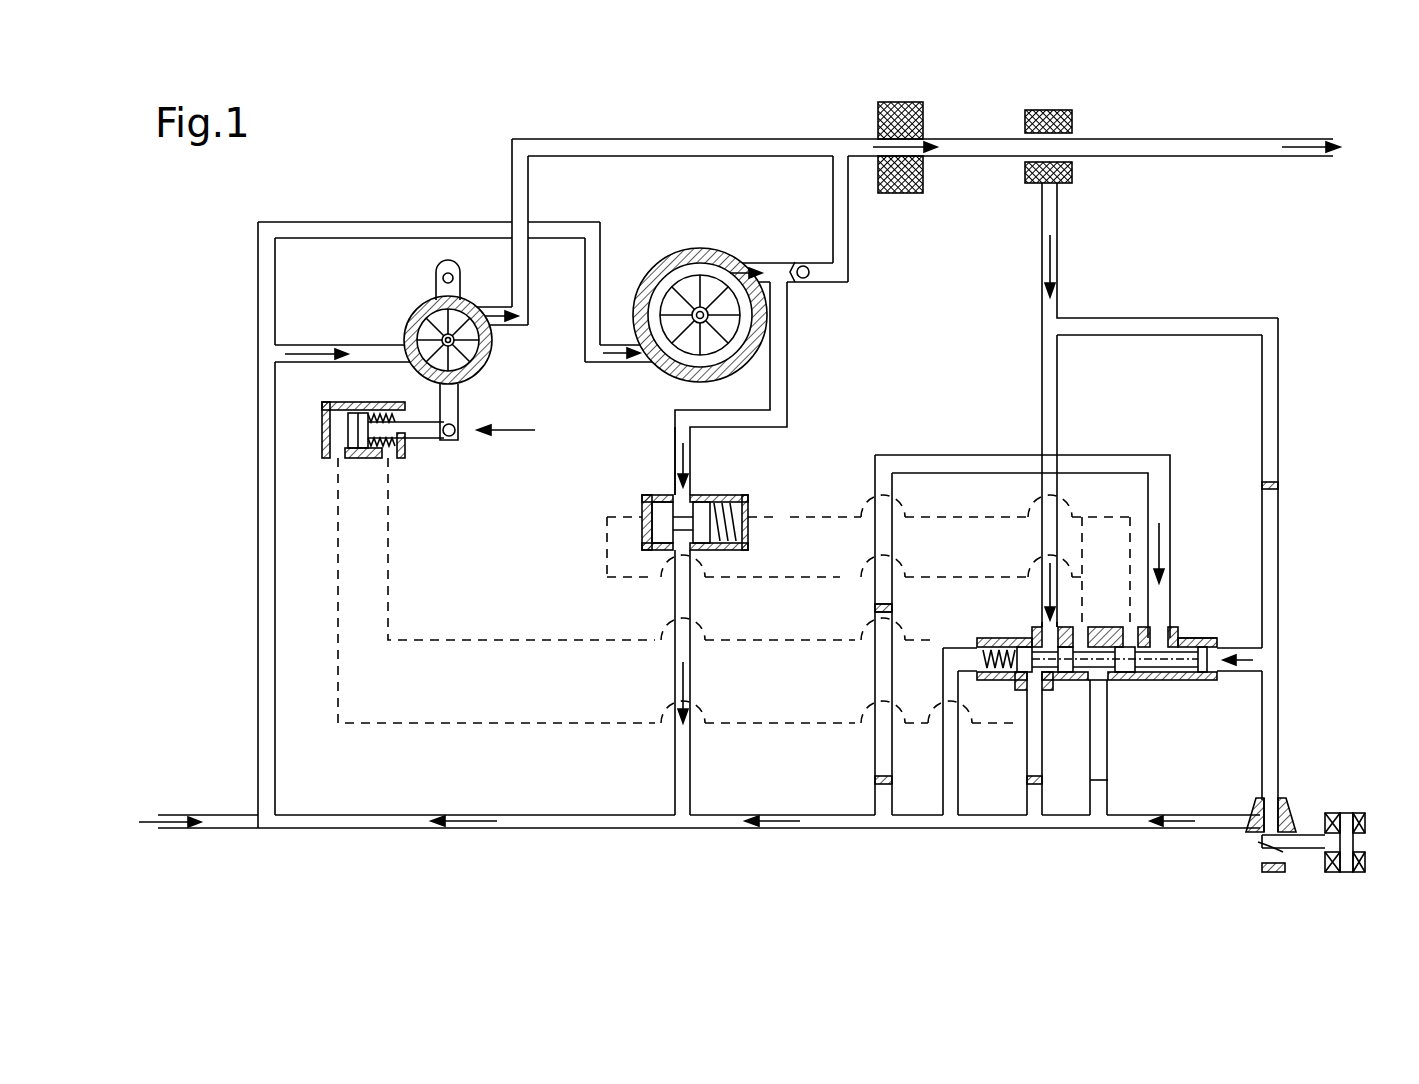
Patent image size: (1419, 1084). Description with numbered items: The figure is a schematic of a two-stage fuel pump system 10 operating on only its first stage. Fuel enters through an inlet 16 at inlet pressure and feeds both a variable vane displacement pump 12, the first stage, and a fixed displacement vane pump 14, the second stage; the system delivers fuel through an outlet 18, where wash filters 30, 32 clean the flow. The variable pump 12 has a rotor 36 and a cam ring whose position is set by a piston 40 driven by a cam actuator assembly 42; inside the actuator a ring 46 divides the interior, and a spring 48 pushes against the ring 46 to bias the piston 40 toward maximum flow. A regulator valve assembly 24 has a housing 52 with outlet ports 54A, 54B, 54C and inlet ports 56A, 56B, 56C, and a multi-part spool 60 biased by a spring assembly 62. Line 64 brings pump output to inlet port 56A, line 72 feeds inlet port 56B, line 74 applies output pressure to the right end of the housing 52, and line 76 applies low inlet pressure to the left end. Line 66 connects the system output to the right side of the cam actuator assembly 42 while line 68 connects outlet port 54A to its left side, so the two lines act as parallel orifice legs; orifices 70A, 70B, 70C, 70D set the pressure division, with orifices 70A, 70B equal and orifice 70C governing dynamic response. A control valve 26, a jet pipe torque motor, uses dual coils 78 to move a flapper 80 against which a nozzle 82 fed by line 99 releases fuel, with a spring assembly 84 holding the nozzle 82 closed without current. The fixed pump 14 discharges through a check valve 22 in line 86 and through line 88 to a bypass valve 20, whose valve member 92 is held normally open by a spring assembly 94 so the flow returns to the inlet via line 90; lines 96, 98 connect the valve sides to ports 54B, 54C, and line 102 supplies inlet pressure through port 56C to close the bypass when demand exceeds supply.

The two-stage fuel pump system 10 is at (476, 124).
The variable vane displacement pump 12 is at (401, 261).
The fixed displacement vane pump 14 is at (696, 246).
The inlet 16 is at (229, 812).
The outlet 18 is at (1284, 134).
The bypass valve 20 is at (719, 503).
The check valve 22 is at (804, 285).
The regulator valve assembly 24 is at (1136, 673).
The control valve 26 is at (1366, 837).
The wash filter 30 is at (882, 102).
The wash filter 32 is at (1042, 110).
The rotor 36 is at (428, 305).
The piston 40 is at (452, 428).
The cam actuator assembly 42 is at (346, 438).
The ring 46 is at (362, 410).
The spring 48 is at (376, 453).
The housing 52 is at (1210, 676).
The outlet port 54A is at (1026, 752).
The outlet port 54B is at (1103, 627).
The outlet port 54C is at (1142, 626).
The inlet port 56A is at (1036, 623).
The inlet port 56B is at (1230, 636).
The inlet port 56C is at (1100, 680).
The spool 60 is at (1190, 680).
The spring assembly 62 is at (985, 640).
The line 64 is at (1060, 248).
The line 66 is at (389, 590).
The line 68 is at (450, 724).
The orifice 70A is at (875, 608).
The orifice 70B is at (875, 780).
The orifice 70C is at (1027, 780).
The orifice 70D is at (1280, 485).
The line 72 is at (1098, 455).
The line 74 is at (1270, 652).
The line 76 is at (878, 696).
The dual coils 78 is at (1350, 813).
The flapper 80 is at (1302, 845).
The nozzle 82 is at (1258, 812).
The spring assembly 84 is at (1262, 865).
The line 86 is at (772, 264).
The line 88 is at (788, 378).
The line 90 is at (672, 772).
The valve member 92 is at (705, 512).
The spring assembly 94 is at (733, 552).
The line 96 is at (781, 519).
The line 98 is at (841, 567).
The line 99 is at (1267, 537).
The line 102 is at (1108, 777).